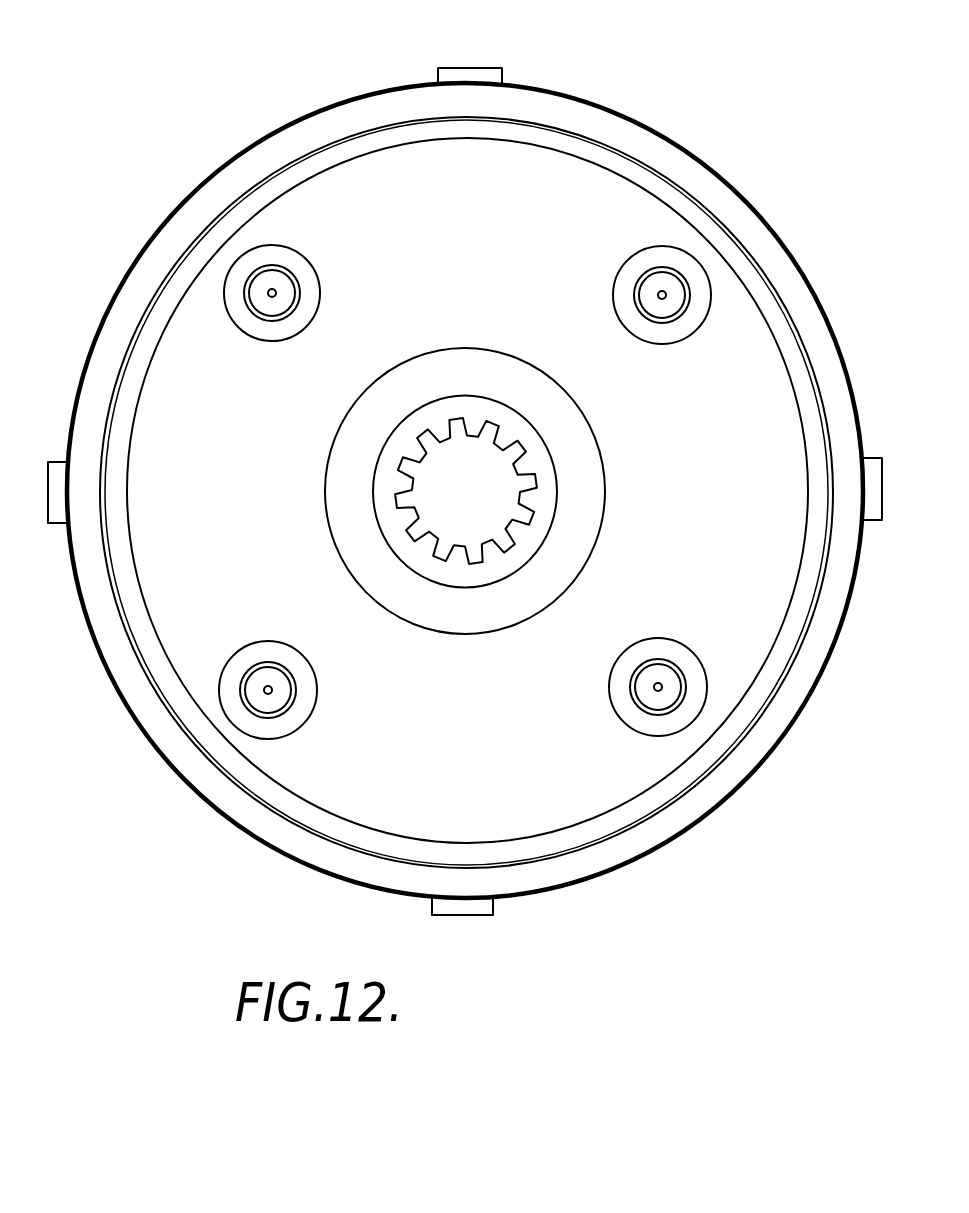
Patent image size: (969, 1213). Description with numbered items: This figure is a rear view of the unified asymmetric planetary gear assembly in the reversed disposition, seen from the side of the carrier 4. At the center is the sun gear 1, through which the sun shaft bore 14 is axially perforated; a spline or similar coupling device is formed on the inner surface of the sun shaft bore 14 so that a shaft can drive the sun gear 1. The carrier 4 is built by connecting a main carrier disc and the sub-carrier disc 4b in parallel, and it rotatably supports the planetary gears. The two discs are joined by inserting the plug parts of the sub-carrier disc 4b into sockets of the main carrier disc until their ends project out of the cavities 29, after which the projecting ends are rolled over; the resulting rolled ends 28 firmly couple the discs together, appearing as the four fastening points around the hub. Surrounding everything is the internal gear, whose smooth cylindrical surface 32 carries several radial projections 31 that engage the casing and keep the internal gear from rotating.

The sun gear 1 is at (432, 562).
The carrier 4 is at (560, 742).
The sub-carrier disc 4b is at (508, 830).
The sun shaft bore 14 is at (395, 472).
The rolled ends 28 is at (260, 290).
The cavities 29 is at (273, 273).
The radial projections 31 is at (480, 72).
The smooth cylindrical surface 32 is at (610, 107).